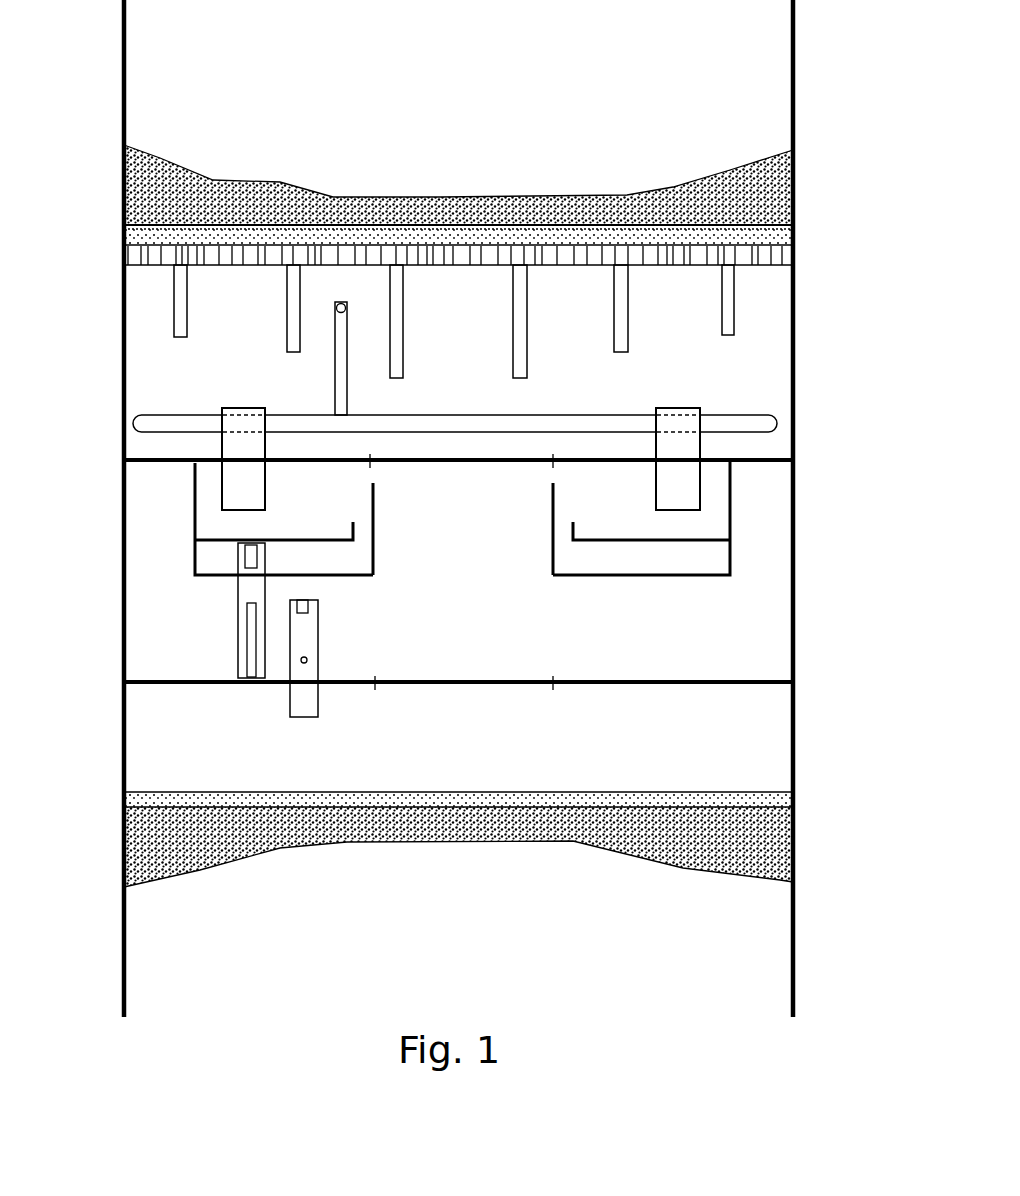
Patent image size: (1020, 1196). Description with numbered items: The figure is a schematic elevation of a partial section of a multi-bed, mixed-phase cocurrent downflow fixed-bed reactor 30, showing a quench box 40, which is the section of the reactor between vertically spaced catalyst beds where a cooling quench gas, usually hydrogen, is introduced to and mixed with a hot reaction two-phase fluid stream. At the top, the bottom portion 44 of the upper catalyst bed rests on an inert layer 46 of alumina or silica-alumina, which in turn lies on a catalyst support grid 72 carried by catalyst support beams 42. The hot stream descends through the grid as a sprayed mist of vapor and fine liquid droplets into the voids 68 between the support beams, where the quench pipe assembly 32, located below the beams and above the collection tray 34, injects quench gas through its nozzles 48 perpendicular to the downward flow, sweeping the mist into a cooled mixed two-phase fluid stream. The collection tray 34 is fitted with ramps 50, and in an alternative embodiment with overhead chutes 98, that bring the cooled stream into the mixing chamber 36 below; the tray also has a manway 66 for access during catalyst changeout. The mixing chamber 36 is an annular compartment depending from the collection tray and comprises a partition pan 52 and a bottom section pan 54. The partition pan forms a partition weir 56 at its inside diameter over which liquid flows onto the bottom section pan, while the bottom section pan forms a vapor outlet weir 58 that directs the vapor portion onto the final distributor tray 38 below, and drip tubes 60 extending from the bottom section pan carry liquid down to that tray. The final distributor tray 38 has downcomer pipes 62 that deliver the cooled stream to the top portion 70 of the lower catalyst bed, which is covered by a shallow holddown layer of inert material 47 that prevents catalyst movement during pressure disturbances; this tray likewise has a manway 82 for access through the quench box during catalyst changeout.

The reactor 30 is at (850, 47).
The quench pipe assembly 32 is at (783, 422).
The collection tray 34 is at (755, 463).
The mixing chamber 36 is at (155, 534).
The final distributor tray 38 is at (740, 687).
The quench box 40 is at (60, 382).
The catalyst support beams 42 is at (167, 298).
The bottom portion of catalyst bed 44 is at (765, 202).
The inert layer 46 is at (163, 234).
The inert material layer 47 is at (153, 800).
The quench gas nozzles 48 is at (333, 371).
The ramps 50 is at (243, 485).
The partition pan 52 is at (677, 532).
The bottom section pan 54 is at (663, 582).
The partition weir 56 is at (568, 532).
The vapor outlet weir 58 is at (550, 508).
The drip tubes 60 is at (233, 603).
The downcomer pipes 62 is at (320, 627).
The manway 66 is at (453, 452).
The voids 68 is at (568, 318).
The top portion of catalyst bed 70 is at (760, 837).
The catalyst support grid 72 is at (783, 253).
The manway 82 is at (460, 678).
The overhead chutes 98 is at (243, 407).